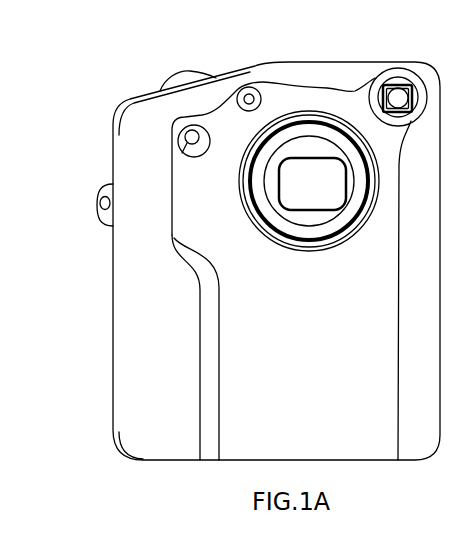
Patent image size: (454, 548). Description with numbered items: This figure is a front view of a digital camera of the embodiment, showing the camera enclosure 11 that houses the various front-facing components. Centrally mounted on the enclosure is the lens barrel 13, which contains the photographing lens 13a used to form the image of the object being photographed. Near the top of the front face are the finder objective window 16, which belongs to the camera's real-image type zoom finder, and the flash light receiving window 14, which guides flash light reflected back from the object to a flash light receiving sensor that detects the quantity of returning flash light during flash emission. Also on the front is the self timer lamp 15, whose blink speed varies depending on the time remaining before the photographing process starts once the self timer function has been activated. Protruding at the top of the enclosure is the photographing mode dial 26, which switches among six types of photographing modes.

The camera enclosure 11 is at (128, 104).
The lens barrel 13 is at (345, 238).
The photographing lens 13a is at (311, 186).
The flash light receiving window 14 is at (249, 87).
The self timer lamp 15 is at (178, 153).
The finder objective window 16 is at (398, 93).
The photographing mode dial 26 is at (173, 72).